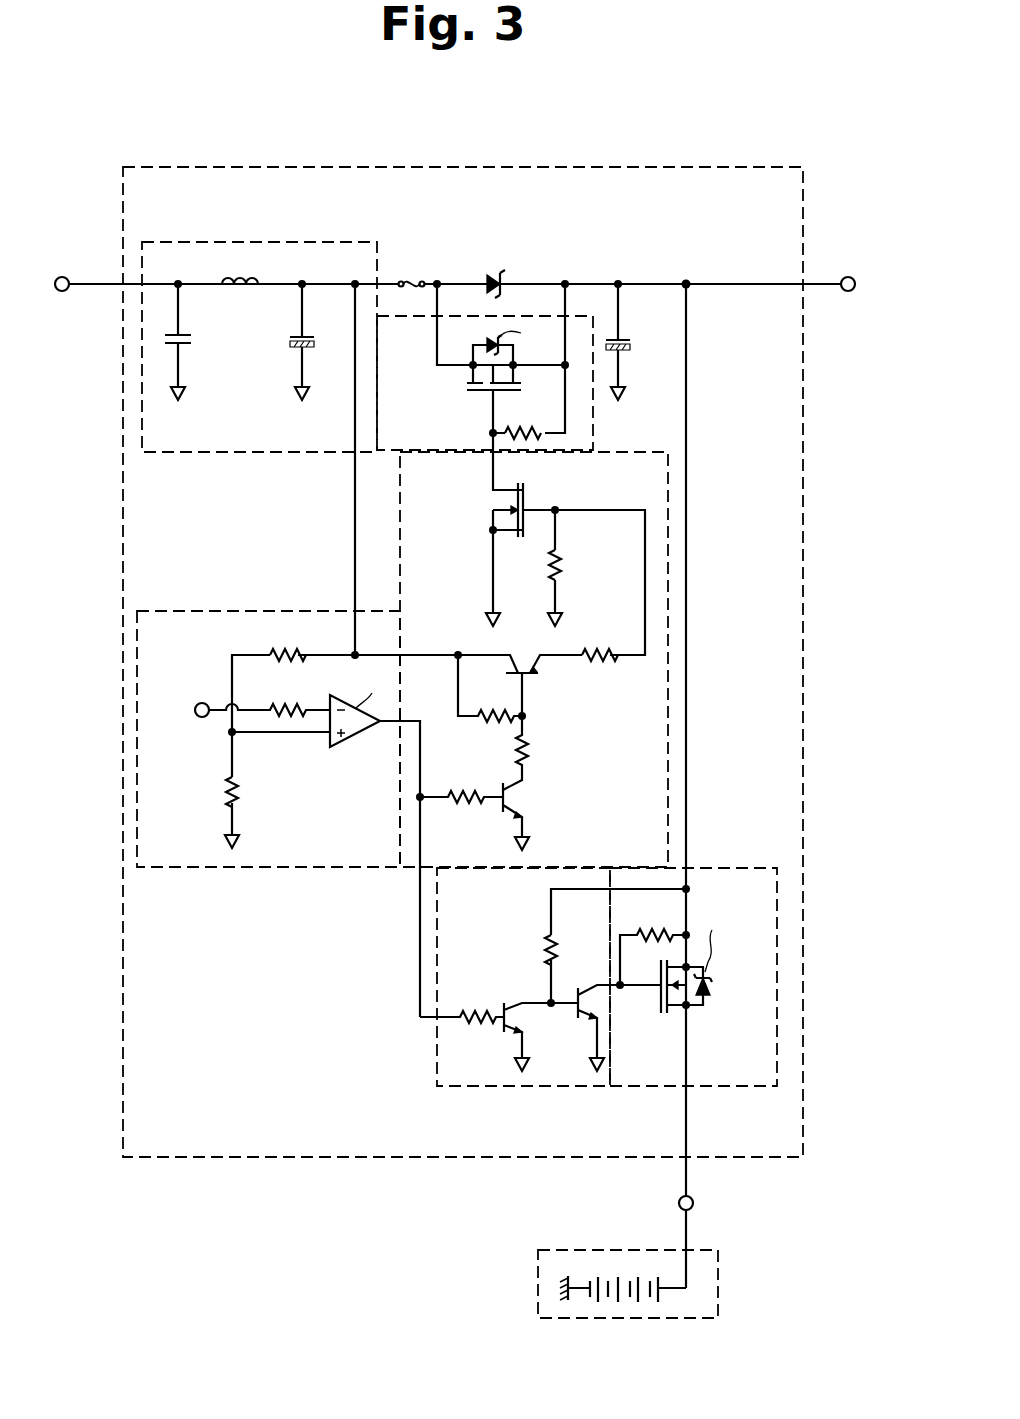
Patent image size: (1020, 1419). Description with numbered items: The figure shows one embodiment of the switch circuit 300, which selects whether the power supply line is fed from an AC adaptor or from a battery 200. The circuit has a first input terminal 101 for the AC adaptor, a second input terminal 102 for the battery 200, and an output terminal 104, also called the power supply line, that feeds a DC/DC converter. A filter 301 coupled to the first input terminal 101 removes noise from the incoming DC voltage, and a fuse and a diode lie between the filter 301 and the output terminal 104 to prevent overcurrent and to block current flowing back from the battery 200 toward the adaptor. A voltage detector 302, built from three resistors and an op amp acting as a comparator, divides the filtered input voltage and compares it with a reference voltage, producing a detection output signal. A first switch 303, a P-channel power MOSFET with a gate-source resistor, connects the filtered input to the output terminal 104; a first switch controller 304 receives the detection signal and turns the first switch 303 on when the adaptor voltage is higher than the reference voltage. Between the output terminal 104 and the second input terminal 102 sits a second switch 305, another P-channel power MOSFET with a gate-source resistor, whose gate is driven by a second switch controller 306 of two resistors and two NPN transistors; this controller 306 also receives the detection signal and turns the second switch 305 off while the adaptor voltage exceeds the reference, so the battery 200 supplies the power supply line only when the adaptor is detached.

The first input terminal 101 is at (66, 277).
The output terminal 104 is at (852, 277).
The second input terminal 102 is at (693, 1203).
The battery 200 is at (718, 1282).
The switch circuit 300 is at (762, 166).
The filter 301 is at (198, 242).
The voltage detector 302 is at (200, 609).
The first switch 303 is at (593, 427).
The first switch controller 304 is at (668, 486).
The second switch 305 is at (735, 868).
The second switch controller 306 is at (482, 1087).